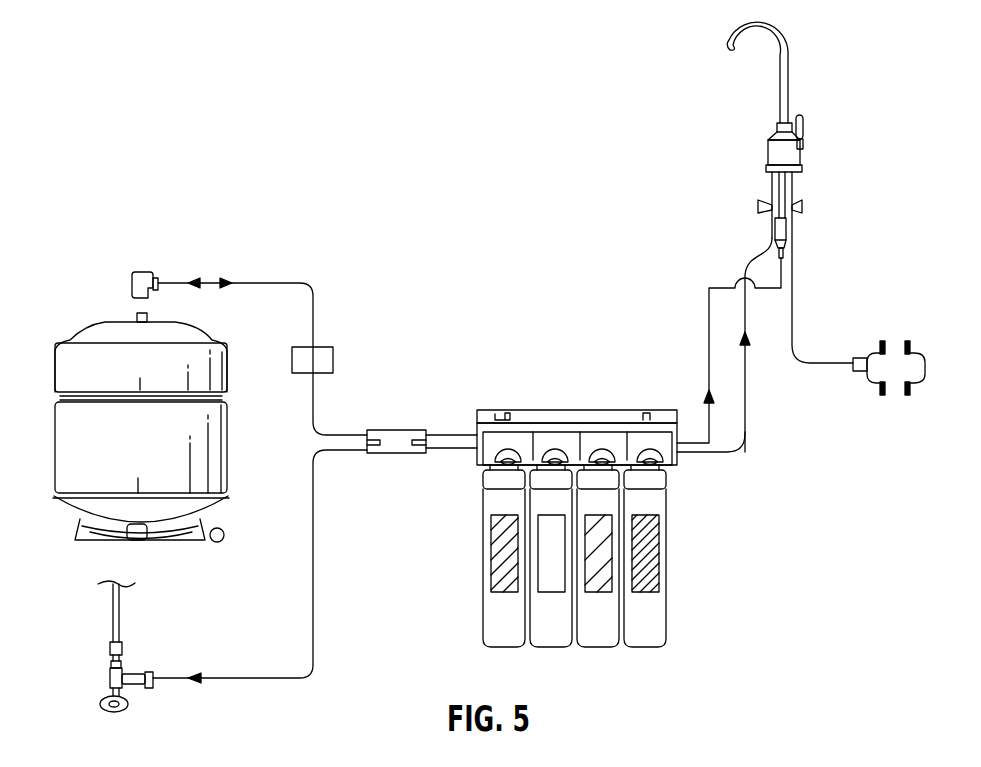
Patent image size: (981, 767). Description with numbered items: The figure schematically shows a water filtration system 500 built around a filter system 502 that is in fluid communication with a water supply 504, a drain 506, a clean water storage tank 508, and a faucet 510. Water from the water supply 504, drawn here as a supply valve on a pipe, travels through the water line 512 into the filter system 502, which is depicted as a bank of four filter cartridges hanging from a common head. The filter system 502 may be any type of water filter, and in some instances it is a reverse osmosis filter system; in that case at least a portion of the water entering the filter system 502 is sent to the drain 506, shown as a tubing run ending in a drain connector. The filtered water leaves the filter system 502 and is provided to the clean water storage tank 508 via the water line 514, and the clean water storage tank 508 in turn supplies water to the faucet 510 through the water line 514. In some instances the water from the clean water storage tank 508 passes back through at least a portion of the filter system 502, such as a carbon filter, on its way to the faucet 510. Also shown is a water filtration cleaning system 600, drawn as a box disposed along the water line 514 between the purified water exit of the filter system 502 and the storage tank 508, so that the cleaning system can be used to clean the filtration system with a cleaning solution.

The water filtration system 500 is at (176, 191).
The filter system 502 is at (680, 578).
The water supply 504 is at (112, 665).
The drain 506 is at (832, 360).
The clean water storage tank 508 is at (210, 457).
The faucet 510 is at (787, 72).
The water line 512 is at (315, 600).
The water line 514 is at (316, 308).
The water filtration cleaning system 600 is at (334, 358).